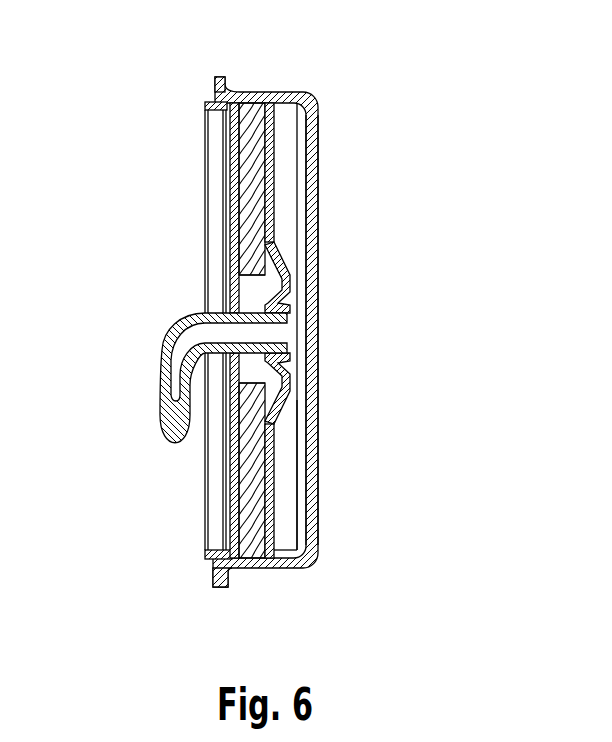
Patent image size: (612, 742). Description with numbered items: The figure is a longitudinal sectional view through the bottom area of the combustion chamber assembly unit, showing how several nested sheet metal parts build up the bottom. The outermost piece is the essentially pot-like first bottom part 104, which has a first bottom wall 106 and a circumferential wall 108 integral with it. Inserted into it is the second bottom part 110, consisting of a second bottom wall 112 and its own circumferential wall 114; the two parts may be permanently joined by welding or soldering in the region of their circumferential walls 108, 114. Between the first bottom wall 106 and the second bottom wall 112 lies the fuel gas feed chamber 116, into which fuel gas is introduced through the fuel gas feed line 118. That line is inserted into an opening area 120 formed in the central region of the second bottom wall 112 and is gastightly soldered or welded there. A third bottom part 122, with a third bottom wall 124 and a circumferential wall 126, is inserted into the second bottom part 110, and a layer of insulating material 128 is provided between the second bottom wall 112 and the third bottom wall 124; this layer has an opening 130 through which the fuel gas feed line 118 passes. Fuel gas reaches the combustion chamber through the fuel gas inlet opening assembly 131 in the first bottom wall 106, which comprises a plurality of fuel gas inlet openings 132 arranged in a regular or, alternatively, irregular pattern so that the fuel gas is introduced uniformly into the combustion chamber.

The first bottom part 104 is at (310, 97).
The first bottom wall 106 is at (318, 340).
The circumferential wall 108 is at (250, 92).
The second bottom part 110 is at (286, 137).
The second bottom wall 112 is at (272, 530).
The circumferential wall 114 is at (237, 127).
The fuel gas feed chamber 116 is at (290, 495).
The fuel gas feed line 118 is at (163, 368).
The opening area 120 is at (284, 258).
The third bottom part 122 is at (230, 441).
The third bottom wall 124 is at (233, 215).
The circumferential wall 126 is at (207, 119).
The layer of insulating material 128 is at (255, 480).
The opening 130 is at (250, 293).
The fuel gas inlet opening assembly 131 is at (363, 388).
The fuel gas inlet openings 132 is at (318, 270).